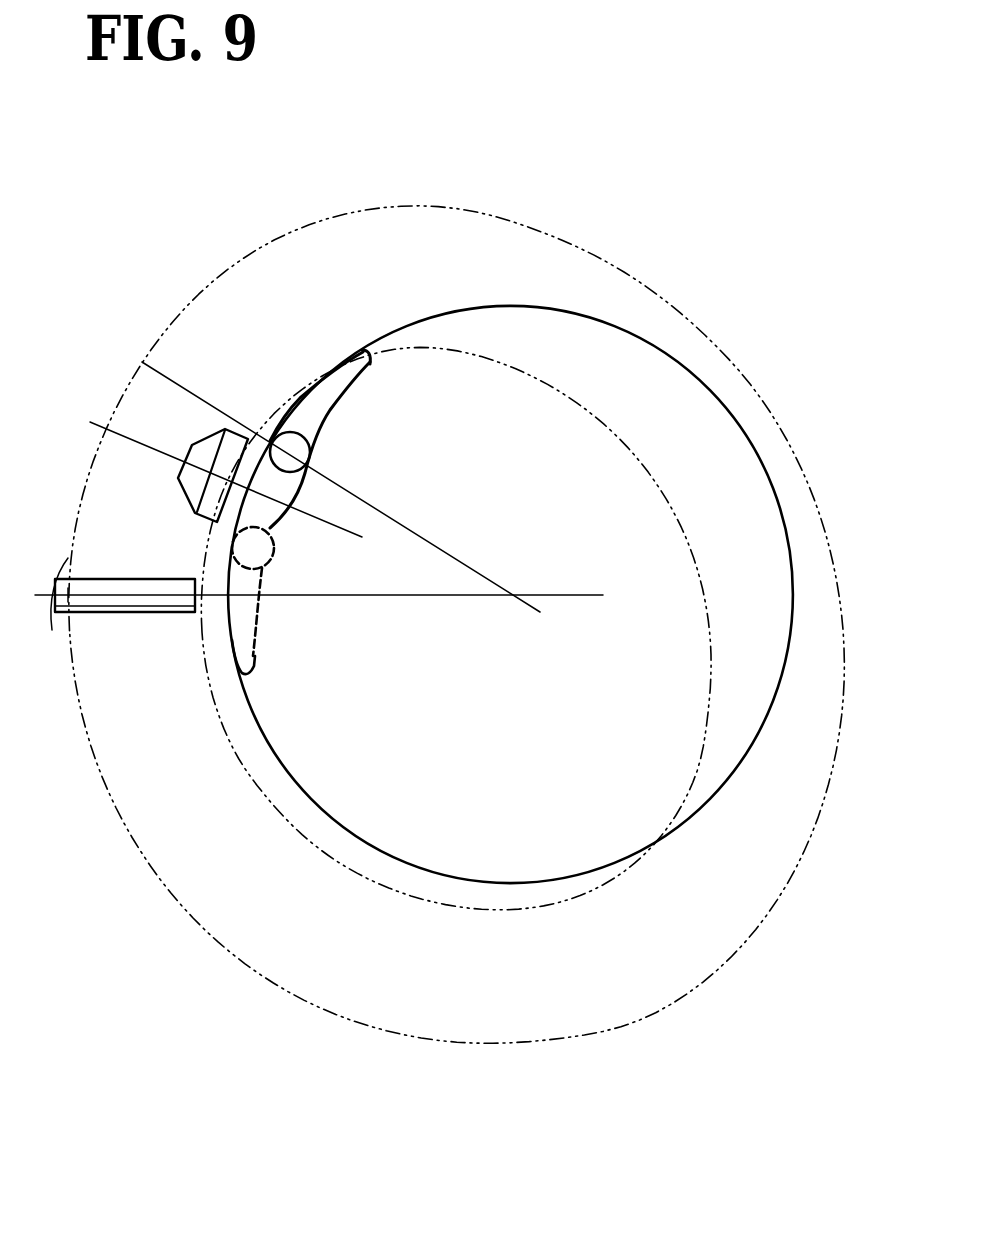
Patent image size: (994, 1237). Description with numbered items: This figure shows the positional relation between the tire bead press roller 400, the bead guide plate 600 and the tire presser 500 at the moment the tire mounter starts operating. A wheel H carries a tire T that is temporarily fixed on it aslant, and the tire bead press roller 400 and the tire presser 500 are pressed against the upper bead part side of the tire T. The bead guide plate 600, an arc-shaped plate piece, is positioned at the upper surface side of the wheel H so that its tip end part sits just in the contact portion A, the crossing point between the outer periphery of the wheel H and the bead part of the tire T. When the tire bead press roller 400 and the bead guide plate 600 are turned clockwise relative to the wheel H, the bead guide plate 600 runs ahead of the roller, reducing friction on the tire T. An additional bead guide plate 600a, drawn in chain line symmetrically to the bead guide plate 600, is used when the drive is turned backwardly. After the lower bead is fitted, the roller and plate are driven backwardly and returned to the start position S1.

The bead guide plate 600 is at (310, 397).
The additional bead guide plate 600a is at (245, 675).
The contact portion A is at (365, 350).
The tire T is at (627, 275).
The wheel H is at (722, 402).
The start position S1 is at (205, 397).
The tire bead press roller 400 is at (183, 499).
The tire presser 500 is at (128, 613).